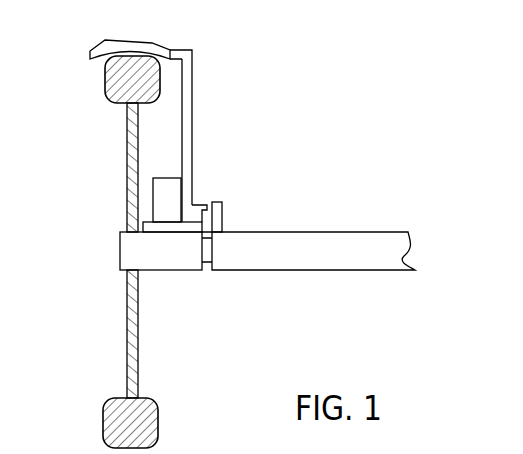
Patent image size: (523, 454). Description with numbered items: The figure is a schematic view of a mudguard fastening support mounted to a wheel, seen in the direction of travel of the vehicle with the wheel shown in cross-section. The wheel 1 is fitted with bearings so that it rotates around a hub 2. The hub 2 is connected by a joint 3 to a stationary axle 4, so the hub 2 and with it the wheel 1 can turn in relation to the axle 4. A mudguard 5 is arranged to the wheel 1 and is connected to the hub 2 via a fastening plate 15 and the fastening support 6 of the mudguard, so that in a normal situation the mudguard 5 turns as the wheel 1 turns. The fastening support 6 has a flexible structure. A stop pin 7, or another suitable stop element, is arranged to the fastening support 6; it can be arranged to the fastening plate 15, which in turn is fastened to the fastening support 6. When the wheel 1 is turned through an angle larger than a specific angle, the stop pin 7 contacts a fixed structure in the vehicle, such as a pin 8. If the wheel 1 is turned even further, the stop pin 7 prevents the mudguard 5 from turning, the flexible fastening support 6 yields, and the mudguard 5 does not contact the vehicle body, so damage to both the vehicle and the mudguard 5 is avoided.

The wheel 1 is at (120, 413).
The hub 2 is at (137, 250).
The joint 3 is at (207, 258).
The stationary axle 4 is at (323, 255).
The mudguard 5 is at (137, 44).
The fastening support 6 is at (143, 170).
The stop pin 7 is at (197, 203).
The pin 8 is at (218, 212).
The fastening plate 15 is at (187, 132).